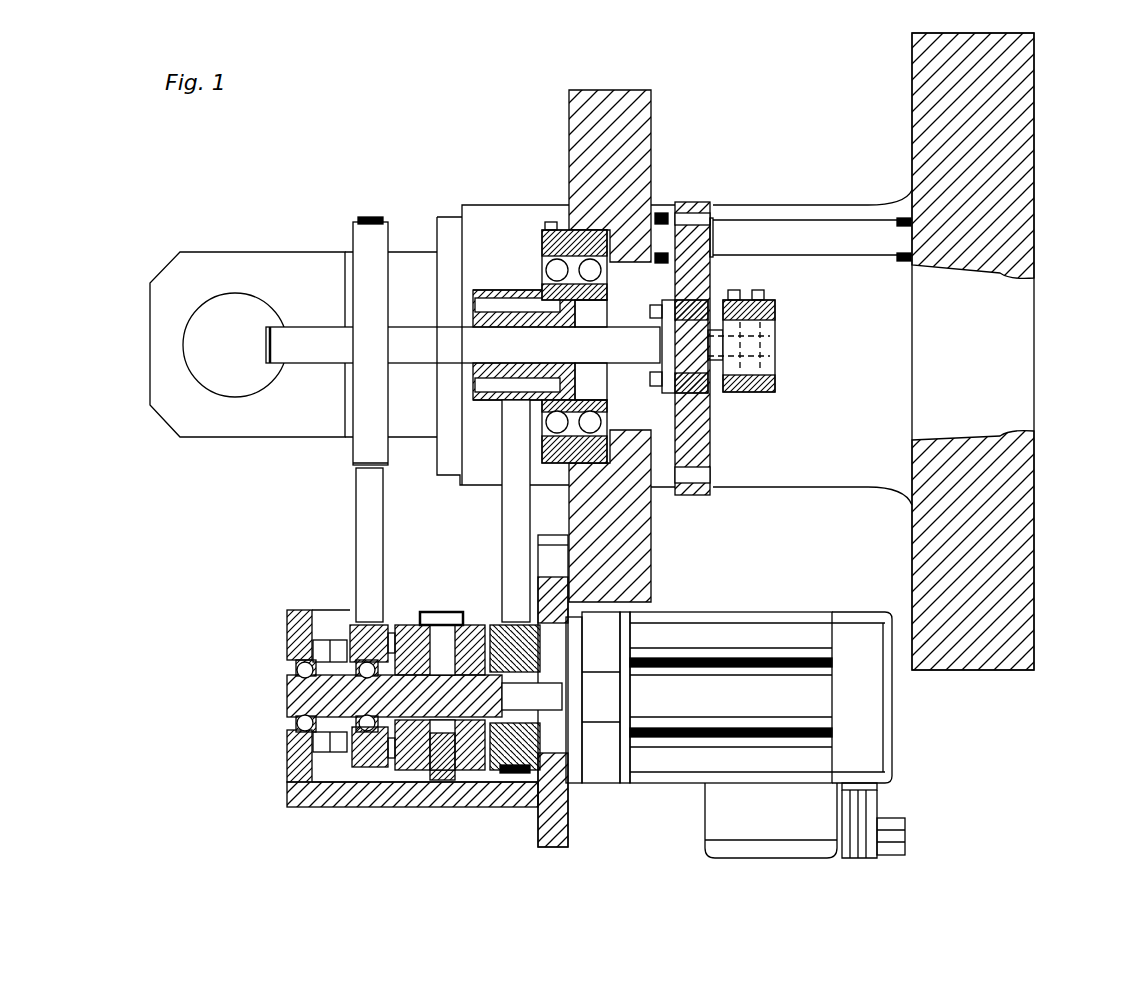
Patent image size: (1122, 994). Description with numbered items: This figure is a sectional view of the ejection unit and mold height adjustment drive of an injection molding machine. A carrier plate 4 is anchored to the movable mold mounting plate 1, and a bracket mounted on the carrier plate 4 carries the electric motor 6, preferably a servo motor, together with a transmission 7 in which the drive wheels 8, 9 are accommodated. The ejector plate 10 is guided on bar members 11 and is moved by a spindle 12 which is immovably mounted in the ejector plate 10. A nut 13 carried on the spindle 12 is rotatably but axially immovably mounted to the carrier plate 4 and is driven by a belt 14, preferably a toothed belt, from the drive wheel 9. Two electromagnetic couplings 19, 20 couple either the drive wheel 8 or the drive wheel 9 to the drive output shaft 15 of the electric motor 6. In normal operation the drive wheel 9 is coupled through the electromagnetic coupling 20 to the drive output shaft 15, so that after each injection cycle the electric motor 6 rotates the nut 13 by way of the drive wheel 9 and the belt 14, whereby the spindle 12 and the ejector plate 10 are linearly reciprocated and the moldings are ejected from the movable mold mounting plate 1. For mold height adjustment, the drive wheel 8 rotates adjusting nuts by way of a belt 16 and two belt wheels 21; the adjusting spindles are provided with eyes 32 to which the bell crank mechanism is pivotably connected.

The movable mold mounting plate 1 is at (1003, 222).
The carrier plate 4 is at (606, 120).
The electric motor 6 is at (860, 708).
The transmission 7 is at (272, 752).
The drive wheel 8 is at (350, 768).
The drive wheel 9 is at (507, 772).
The ejector plate 10 is at (690, 225).
The bar members 11 is at (785, 240).
The spindle 12 is at (402, 343).
The nut 13 is at (492, 318).
The belt 14 is at (515, 537).
The drive output shaft 15 is at (320, 695).
The belt 16 is at (365, 575).
The electromagnetic coupling 19 is at (413, 763).
The electromagnetic coupling 20 is at (465, 752).
The belt wheels 21 is at (370, 270).
The eyes 32 is at (202, 282).